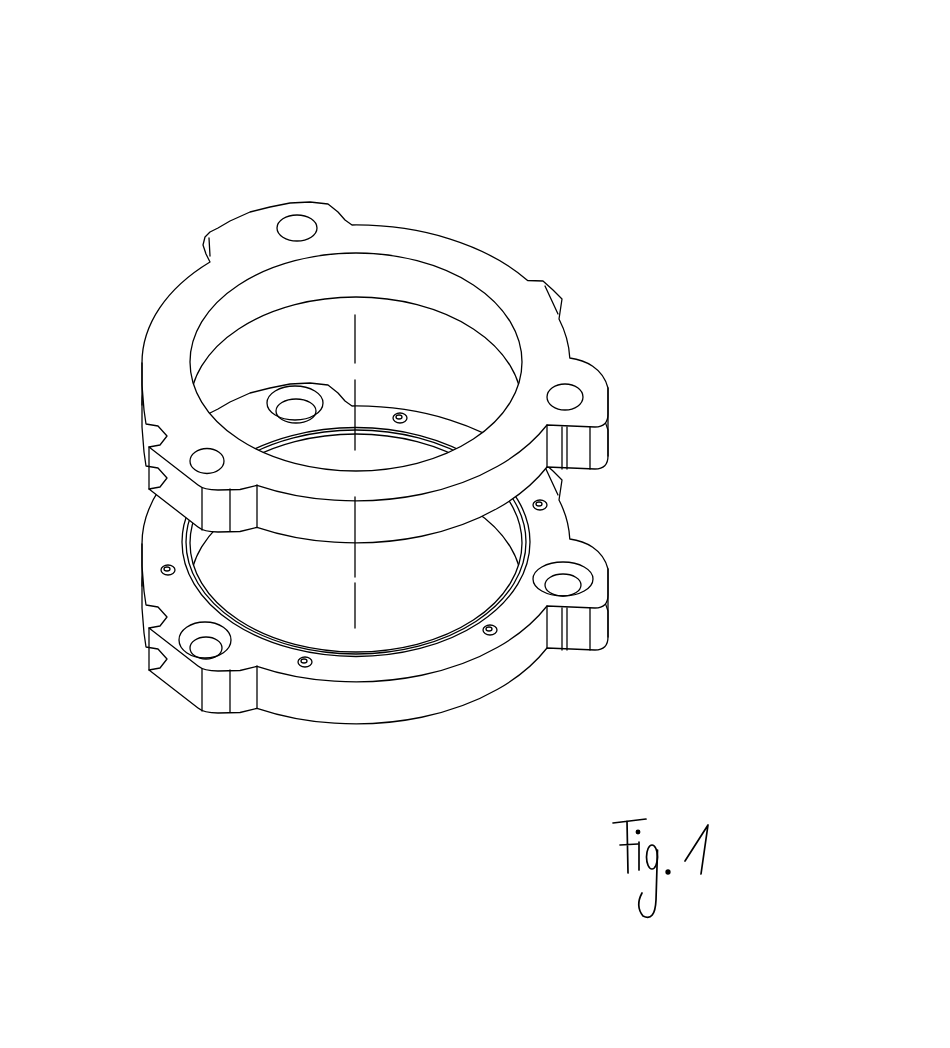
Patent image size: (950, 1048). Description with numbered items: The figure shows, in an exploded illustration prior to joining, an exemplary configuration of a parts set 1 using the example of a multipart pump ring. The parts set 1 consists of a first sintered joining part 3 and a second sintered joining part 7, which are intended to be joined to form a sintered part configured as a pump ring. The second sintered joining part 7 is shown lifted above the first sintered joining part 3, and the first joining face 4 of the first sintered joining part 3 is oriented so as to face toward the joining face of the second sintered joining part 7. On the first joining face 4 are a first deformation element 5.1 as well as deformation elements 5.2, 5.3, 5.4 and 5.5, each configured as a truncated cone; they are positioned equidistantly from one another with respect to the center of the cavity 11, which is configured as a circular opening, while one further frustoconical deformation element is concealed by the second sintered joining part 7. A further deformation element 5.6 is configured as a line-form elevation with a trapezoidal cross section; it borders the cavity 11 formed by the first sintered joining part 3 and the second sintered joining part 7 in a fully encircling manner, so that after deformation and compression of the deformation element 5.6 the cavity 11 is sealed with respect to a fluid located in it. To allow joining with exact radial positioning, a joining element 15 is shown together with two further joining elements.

The parts set 1 is at (172, 148).
The first sintered joining part 3 is at (152, 608).
The first joining face 4 is at (430, 662).
The first deformation element 5.1 is at (307, 656).
The deformation element 5.2 is at (165, 571).
The deformation element 5.3 is at (404, 416).
The deformation element 5.4 is at (548, 505).
The deformation element 5.5 is at (500, 630).
The further deformation element 5.6 is at (180, 547).
The second sintered joining part 7 is at (415, 244).
The cavity 11 is at (390, 444).
The joining element 15 is at (205, 648).